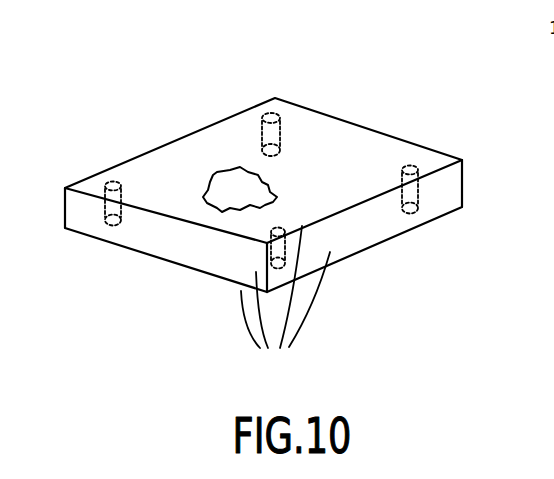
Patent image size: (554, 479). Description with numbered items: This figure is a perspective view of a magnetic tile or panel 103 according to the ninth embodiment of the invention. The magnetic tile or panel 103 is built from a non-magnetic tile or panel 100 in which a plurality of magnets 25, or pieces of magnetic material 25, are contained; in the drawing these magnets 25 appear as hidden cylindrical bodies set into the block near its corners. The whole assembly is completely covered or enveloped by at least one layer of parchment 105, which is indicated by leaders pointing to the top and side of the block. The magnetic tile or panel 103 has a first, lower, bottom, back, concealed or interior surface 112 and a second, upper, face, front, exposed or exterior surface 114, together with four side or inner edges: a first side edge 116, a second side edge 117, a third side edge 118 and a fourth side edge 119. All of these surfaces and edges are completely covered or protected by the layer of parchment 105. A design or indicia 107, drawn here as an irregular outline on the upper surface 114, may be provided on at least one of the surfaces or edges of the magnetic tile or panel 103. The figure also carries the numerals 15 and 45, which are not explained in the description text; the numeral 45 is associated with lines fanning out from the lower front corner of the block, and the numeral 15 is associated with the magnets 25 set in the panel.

The non-magnetic tile or panel 100 is at (343, 190).
The magnetic tile or panel 103 is at (382, 113).
The layer of parchment 105 is at (387, 153).
The design or indicia 107 is at (237, 193).
The lower or bottom surface 112 is at (220, 280).
The upper or face surface 114 is at (172, 160).
The first side edge 116 is at (367, 237).
The second side edge 117 is at (468, 197).
The third side edge 118 is at (213, 123).
The fourth side edge 119 is at (180, 255).
The through hole 15 is at (278, 147).
The magnet or magnetic material 25 is at (281, 125).
The fibers 45 is at (285, 301).